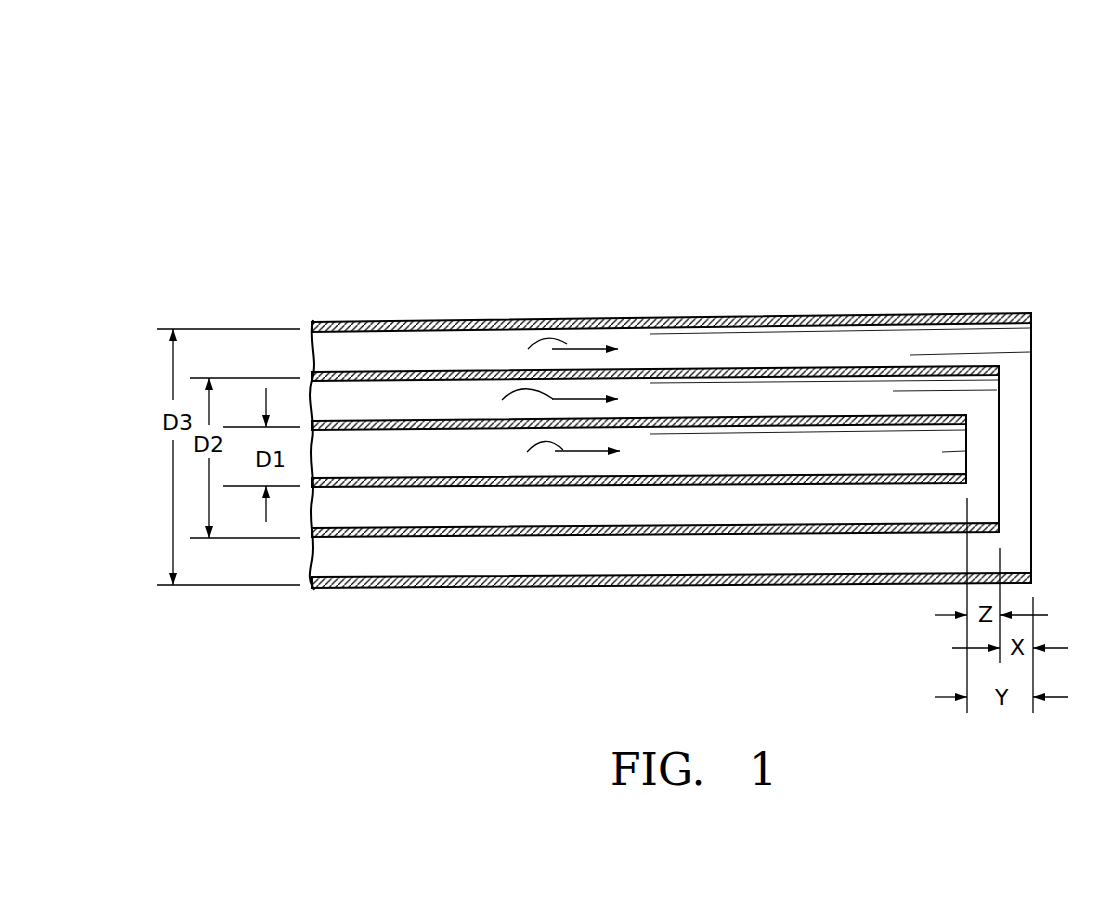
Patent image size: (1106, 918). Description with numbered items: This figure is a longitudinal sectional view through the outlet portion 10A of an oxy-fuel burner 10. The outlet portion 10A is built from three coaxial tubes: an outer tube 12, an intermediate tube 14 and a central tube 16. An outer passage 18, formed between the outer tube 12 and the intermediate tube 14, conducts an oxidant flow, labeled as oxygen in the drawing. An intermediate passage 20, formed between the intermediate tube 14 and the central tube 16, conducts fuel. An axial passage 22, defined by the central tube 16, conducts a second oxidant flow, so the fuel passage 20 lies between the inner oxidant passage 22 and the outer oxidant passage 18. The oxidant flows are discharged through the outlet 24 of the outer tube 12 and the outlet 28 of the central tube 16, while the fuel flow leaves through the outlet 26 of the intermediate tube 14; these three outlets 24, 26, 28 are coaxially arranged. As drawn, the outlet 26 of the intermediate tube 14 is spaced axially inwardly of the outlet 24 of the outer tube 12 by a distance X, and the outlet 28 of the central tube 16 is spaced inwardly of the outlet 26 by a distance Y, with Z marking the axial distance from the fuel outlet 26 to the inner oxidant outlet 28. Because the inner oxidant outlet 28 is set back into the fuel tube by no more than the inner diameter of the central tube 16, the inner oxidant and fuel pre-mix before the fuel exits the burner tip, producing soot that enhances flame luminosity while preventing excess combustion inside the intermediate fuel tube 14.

The oxy-fuel burner 10 is at (657, 293).
The outlet portion 10A is at (575, 318).
The outer tube 12 is at (853, 315).
The intermediate tube 14 is at (790, 367).
The central tube 16 is at (728, 417).
The outer passage 18 is at (990, 339).
The intermediate passage 20 is at (948, 398).
The axial passage 22 is at (947, 445).
The outlet of the outer tube 24 is at (1033, 333).
The outlet of the intermediate tube 26 is at (997, 385).
The outlet of the central tube 28 is at (967, 462).